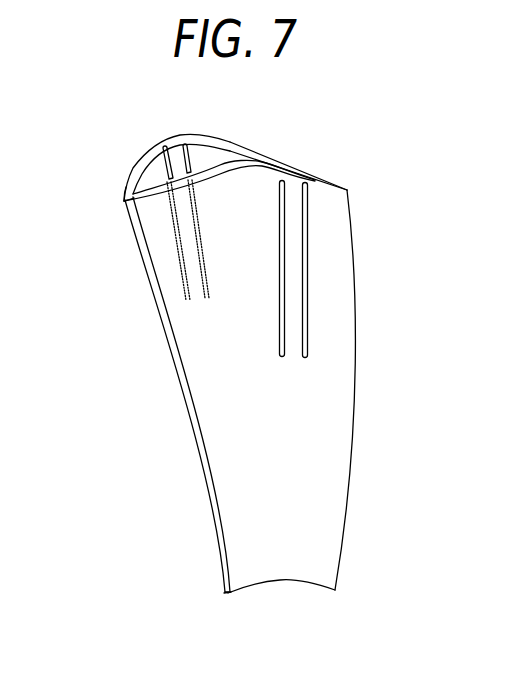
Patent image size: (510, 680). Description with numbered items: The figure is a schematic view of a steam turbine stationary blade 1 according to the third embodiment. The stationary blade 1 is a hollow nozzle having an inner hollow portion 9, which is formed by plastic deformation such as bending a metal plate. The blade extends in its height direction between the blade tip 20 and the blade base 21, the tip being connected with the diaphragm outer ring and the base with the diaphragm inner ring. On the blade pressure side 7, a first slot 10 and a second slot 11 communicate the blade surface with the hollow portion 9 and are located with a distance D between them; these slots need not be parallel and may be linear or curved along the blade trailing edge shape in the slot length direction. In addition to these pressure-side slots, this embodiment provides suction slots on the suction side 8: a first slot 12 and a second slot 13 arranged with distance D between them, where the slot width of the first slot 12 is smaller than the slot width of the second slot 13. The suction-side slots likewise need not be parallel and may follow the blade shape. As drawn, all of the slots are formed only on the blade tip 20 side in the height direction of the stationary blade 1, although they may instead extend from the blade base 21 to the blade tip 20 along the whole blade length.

The stationary blade 1 is at (200, 365).
The blade pressure side 7 is at (330, 500).
The suction side 8 is at (136, 163).
The hollow portion 9 is at (141, 185).
The first slot 10 is at (283, 357).
The second slot 11 is at (307, 323).
The first slot on the suction side 12 is at (163, 160).
The second slot on the suction side 13 is at (181, 152).
The blade tip 20 is at (123, 200).
The blade base 21 is at (222, 593).